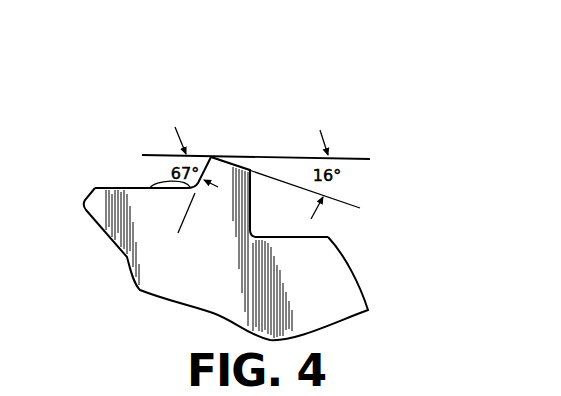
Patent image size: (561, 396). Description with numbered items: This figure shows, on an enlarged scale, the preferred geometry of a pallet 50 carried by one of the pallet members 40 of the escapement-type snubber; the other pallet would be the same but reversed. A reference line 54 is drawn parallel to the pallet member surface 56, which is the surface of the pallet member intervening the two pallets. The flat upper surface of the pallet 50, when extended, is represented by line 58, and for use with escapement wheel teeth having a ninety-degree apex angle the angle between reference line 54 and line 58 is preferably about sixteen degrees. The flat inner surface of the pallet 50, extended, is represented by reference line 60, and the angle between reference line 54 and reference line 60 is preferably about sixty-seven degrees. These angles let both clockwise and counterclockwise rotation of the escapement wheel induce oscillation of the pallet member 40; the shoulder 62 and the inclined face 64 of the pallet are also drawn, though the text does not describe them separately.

The pallet member 40 is at (303, 295).
The pallet 50 is at (222, 172).
The reference line 54 is at (346, 157).
The pallet member surface 56 is at (133, 187).
The line representing the flat upper surface of the pallet extended 58 is at (347, 205).
The reference line representing the flat inner surface of the pallet extended 60 is at (185, 220).
The shoulder corner 62 is at (254, 233).
The sloped face 64 is at (150, 188).